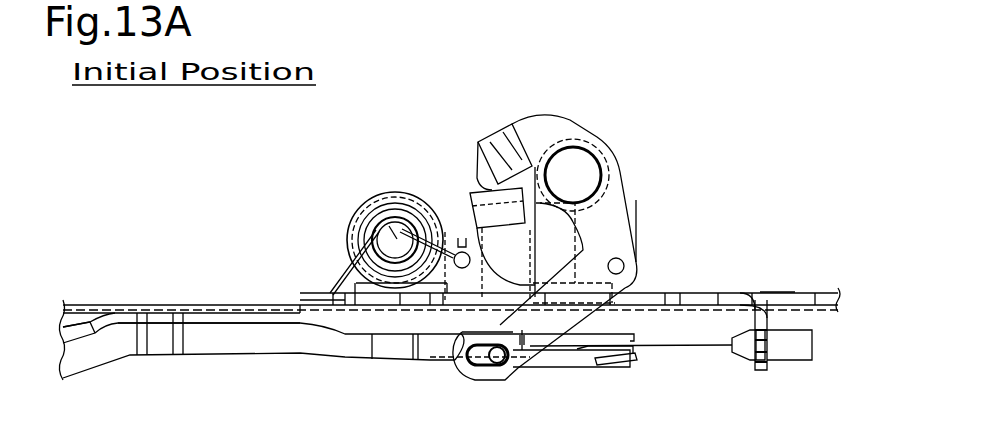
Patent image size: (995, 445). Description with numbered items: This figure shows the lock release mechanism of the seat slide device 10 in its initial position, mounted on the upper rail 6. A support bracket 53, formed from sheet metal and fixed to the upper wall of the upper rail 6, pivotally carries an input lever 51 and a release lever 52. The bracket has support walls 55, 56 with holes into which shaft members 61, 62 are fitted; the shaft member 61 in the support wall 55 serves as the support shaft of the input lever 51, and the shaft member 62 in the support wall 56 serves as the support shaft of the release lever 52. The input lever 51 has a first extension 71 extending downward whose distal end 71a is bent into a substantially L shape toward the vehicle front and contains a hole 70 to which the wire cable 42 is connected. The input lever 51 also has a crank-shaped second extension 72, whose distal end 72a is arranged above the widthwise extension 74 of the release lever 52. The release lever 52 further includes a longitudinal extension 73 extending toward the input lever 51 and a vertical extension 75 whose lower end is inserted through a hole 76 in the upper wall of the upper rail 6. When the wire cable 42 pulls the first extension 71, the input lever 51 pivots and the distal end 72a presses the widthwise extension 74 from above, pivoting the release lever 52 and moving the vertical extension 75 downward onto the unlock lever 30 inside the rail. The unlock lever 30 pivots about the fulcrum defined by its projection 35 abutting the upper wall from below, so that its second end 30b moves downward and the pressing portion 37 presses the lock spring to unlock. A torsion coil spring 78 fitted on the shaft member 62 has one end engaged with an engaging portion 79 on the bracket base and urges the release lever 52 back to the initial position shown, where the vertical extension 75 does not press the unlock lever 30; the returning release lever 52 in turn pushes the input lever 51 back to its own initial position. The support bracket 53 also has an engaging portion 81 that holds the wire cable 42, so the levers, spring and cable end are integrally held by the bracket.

The seat slide device 10 is at (748, 108).
The upper rail 6 is at (207, 300).
The unlock lever 30 is at (318, 353).
The second end 30b is at (642, 331).
The projection 35 is at (107, 314).
The pressing portion 37 is at (619, 358).
The wire cable 42 is at (652, 348).
The input lever 51 is at (584, 138).
The release lever 52 is at (363, 200).
The support bracket 53 is at (794, 296).
The support wall 55 is at (592, 142).
The support wall 56 is at (381, 200).
The shaft member 61 is at (587, 172).
The shaft member 62 is at (354, 234).
The hole 70 is at (476, 372).
The first extension 71 is at (628, 239).
The distal end 71a is at (492, 366).
The second extension 72 is at (501, 136).
The distal end 72a is at (482, 189).
The longitudinal extension 73 is at (513, 246).
The widthwise extension 74 is at (474, 206).
The vertical extension 75 is at (530, 358).
The hole 76 is at (440, 340).
The torsion coil spring 78 is at (399, 211).
The engaging portion 79 is at (320, 298).
The engaging portion 81 is at (760, 376).